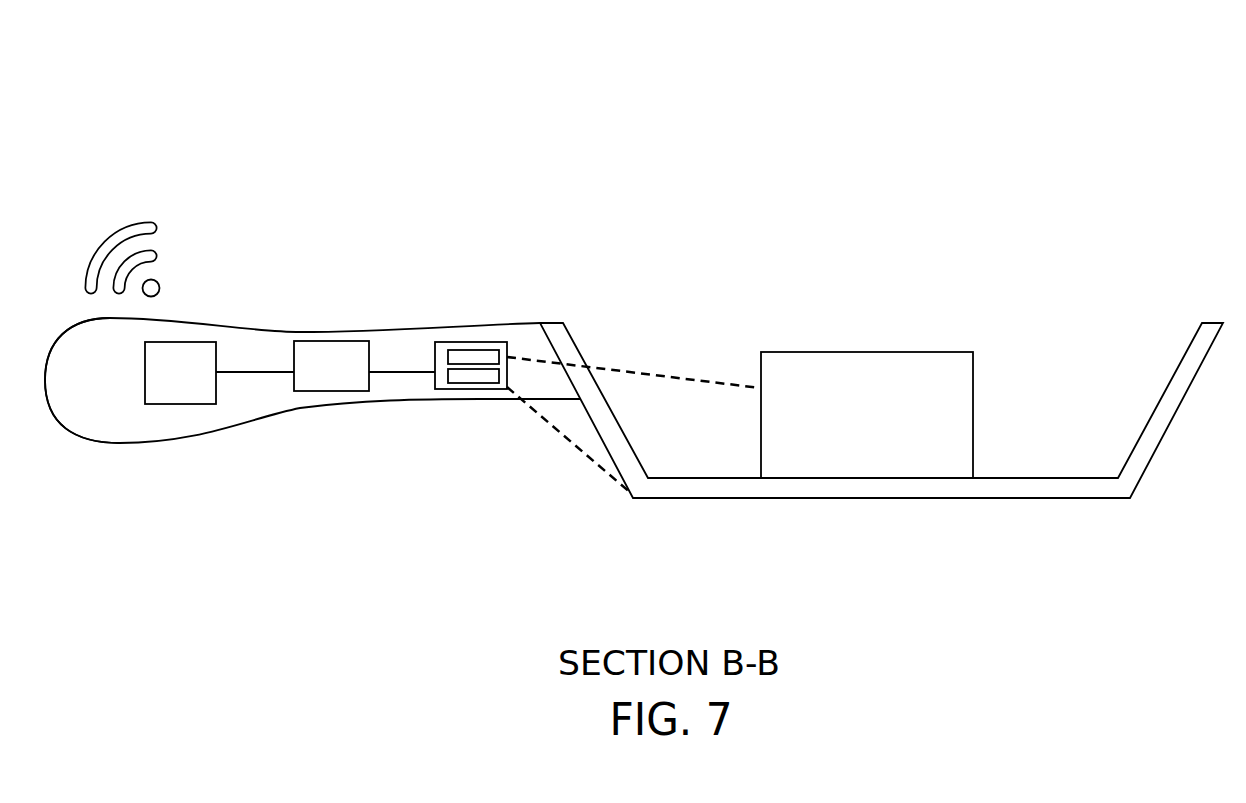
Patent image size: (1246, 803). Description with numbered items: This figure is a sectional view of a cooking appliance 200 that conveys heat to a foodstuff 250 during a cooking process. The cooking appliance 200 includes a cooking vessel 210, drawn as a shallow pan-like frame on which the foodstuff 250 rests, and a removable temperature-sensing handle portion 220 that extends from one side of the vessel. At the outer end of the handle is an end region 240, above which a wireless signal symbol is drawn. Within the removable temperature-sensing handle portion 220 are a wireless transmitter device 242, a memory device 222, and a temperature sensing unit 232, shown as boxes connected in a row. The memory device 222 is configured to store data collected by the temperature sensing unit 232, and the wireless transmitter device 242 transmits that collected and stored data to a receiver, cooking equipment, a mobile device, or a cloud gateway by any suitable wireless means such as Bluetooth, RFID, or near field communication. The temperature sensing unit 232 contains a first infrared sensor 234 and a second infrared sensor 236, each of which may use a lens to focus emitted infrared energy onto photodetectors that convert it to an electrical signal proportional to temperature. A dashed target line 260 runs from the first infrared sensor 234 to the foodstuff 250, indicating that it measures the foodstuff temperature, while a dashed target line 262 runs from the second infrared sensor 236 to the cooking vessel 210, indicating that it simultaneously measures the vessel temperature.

The cooking appliance 200 is at (156, 106).
The cooking vessel 210 is at (1040, 498).
The removable temperature-sensing handle portion 220 is at (313, 408).
The memory device 222 is at (328, 342).
The temperature sensing unit 232 is at (448, 342).
The first infrared sensor 234 is at (485, 348).
The second infrared sensor 236 is at (479, 383).
The housing head 240 is at (127, 443).
The wireless transmitter device 242 is at (168, 342).
The foodstuff 250 is at (882, 352).
The target line 260 is at (645, 372).
The target line 262 is at (590, 460).